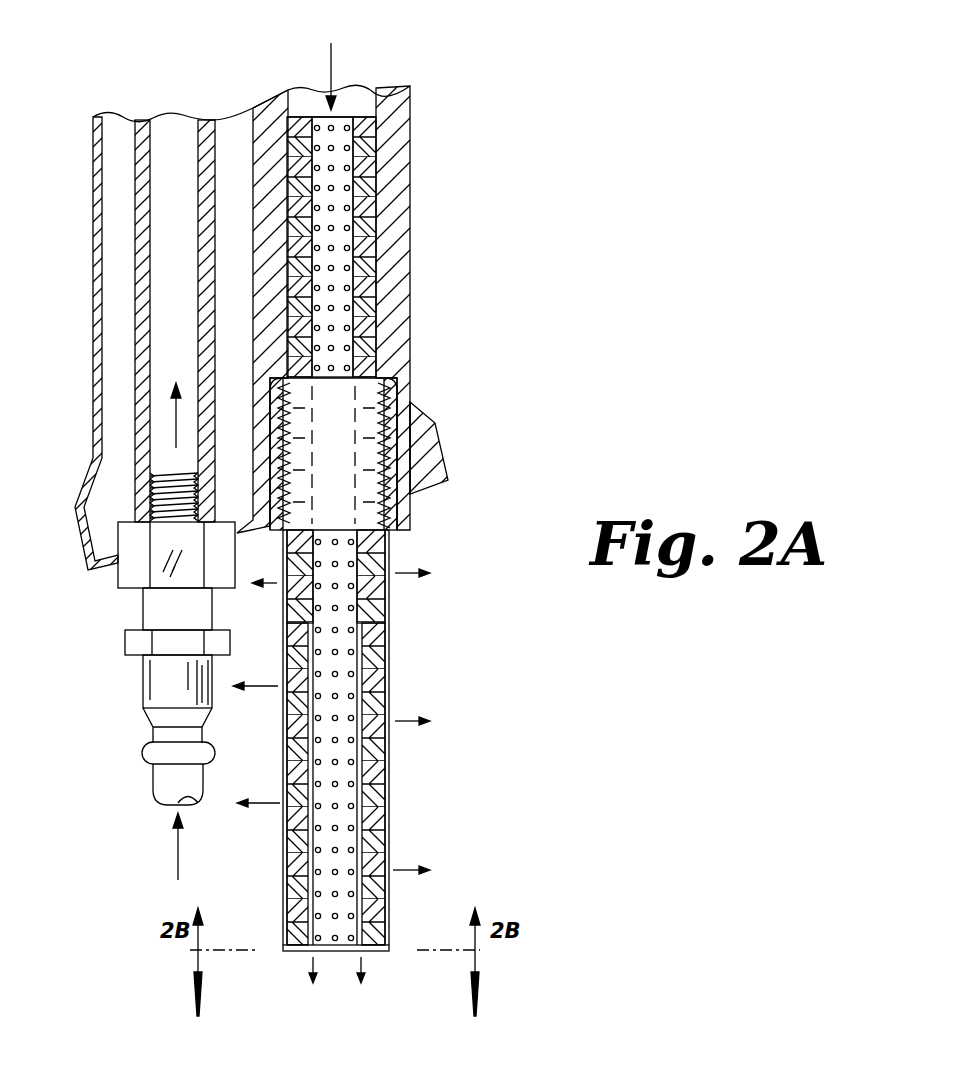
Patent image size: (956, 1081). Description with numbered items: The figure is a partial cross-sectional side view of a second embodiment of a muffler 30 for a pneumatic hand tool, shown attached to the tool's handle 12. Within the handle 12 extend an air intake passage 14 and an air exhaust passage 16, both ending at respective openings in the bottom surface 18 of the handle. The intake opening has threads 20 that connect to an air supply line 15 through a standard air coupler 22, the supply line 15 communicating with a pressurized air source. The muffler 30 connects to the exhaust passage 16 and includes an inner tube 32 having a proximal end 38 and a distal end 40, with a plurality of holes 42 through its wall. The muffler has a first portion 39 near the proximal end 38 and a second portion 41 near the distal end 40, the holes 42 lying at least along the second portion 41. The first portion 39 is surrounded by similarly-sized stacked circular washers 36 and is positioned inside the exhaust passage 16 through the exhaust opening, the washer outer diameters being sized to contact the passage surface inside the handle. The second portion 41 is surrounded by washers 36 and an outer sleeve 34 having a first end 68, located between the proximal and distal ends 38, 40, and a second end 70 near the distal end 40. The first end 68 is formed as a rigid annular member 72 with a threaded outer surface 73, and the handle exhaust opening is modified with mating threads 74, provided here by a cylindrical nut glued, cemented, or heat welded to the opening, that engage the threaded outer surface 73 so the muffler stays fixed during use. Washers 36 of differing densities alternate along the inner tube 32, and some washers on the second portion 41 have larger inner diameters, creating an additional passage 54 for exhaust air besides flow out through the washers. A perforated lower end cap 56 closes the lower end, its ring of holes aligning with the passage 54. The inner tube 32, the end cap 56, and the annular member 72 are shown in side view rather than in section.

The handle 12 is at (93, 173).
The air intake passage 14 is at (172, 253).
The air supply line 15 is at (155, 782).
The air exhaust passage 16 is at (360, 103).
The bottom surface 18 is at (412, 487).
The threads 20 is at (142, 497).
The air coupler 22 is at (143, 670).
The muffler 30 is at (512, 689).
The inner tube 32 is at (337, 858).
The outer sleeve 34 is at (387, 653).
The washers 36 is at (287, 827).
The proximal end 38 is at (320, 117).
The first portion 39 is at (332, 220).
The distal end 40 is at (347, 938).
The second portion 41 is at (337, 730).
The holes 42 is at (352, 803).
The passage 54 is at (317, 887).
The perforated lower end cap 56 is at (380, 947).
The outer sleeve first end 68 is at (393, 415).
The outer sleeve second end 70 is at (387, 905).
The rigid annular member 72 is at (285, 445).
The threaded outer surface 73 is at (287, 484).
The mating threads 74 is at (400, 470).